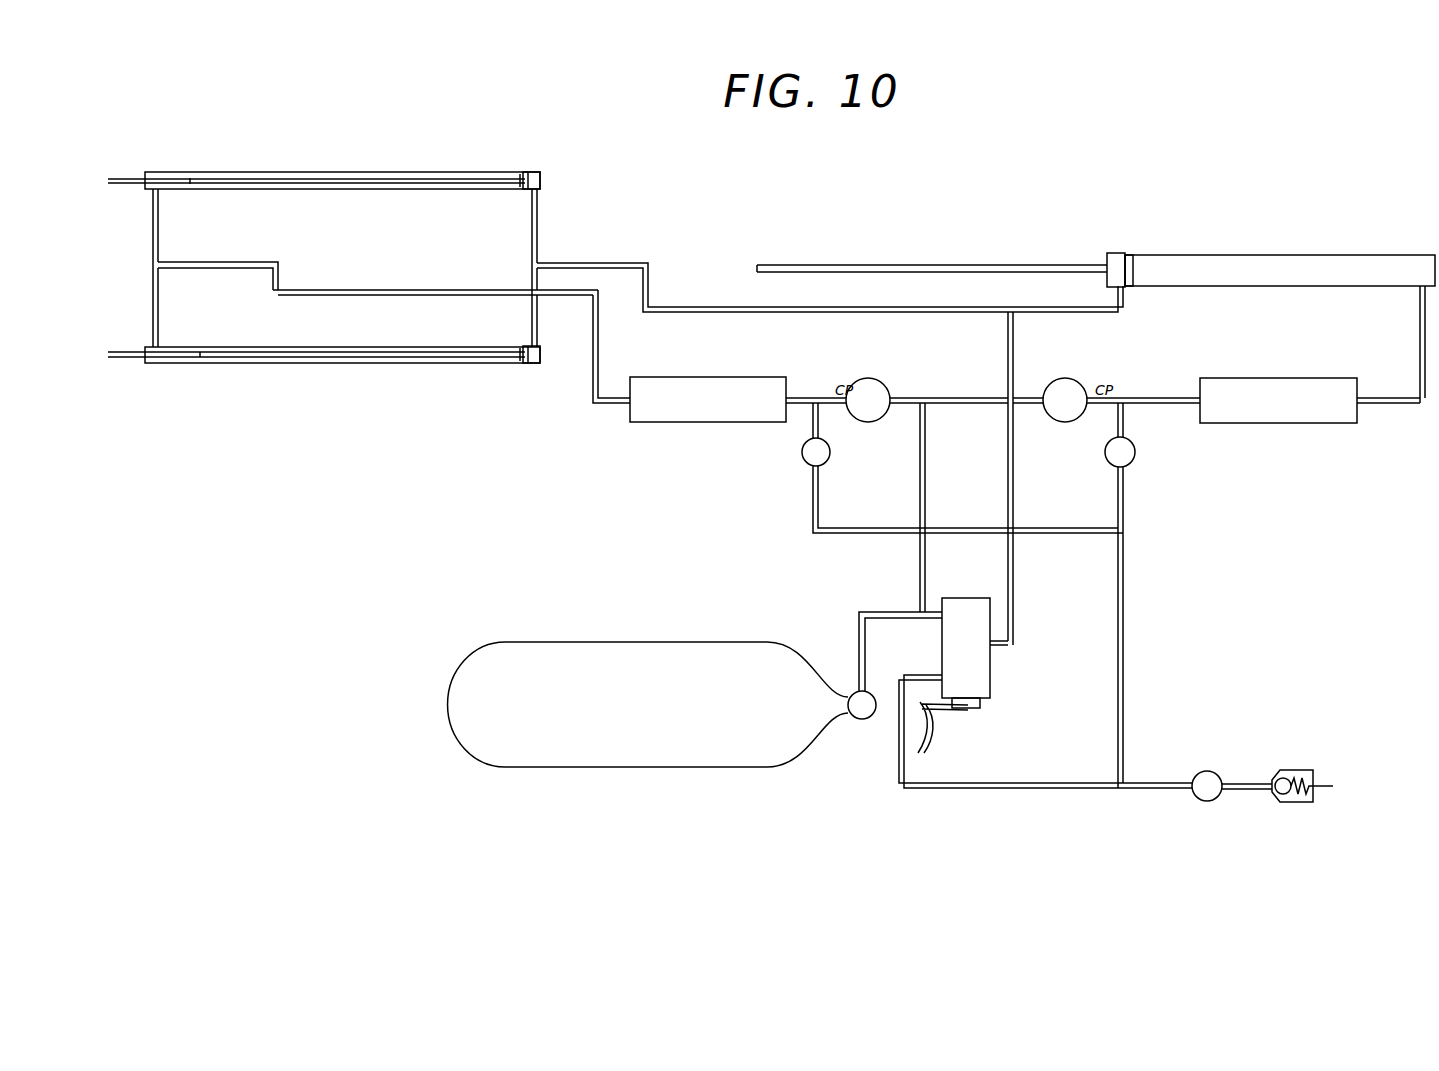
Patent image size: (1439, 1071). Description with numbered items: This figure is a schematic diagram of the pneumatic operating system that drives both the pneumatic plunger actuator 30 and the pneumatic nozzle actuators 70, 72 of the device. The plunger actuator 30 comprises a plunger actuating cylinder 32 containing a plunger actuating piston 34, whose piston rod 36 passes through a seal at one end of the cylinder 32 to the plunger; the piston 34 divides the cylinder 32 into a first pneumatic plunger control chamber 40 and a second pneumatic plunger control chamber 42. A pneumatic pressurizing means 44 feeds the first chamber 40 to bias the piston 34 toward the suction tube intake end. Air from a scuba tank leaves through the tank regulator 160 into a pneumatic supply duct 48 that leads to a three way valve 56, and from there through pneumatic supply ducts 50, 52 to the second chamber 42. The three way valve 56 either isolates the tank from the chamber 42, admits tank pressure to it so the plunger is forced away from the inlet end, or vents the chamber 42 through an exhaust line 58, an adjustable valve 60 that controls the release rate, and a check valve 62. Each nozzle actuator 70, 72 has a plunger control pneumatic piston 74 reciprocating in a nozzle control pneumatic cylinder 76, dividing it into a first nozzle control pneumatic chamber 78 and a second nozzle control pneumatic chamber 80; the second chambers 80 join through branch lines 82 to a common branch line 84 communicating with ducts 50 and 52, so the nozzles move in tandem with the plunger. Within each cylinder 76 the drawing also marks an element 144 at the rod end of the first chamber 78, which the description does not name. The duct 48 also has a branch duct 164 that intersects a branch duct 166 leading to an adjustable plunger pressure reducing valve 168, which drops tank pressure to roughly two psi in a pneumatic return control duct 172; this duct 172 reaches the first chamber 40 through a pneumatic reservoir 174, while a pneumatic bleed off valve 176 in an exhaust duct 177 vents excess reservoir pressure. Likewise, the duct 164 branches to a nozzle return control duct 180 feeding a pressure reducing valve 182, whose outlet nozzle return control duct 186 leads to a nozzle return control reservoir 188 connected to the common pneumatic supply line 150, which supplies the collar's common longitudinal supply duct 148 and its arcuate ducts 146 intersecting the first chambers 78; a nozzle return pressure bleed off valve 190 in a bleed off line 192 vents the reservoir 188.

The pneumatic plunger actuator 30 is at (1257, 255).
The plunger actuating cylinder 32 is at (1268, 287).
The plunger actuating piston 34 is at (1136, 285).
The piston rod 36 is at (965, 265).
The first pneumatic plunger control chamber 40 is at (1368, 270).
The second pneumatic plunger control chamber 42 is at (1116, 258).
The pneumatic pressurizing means 44 is at (1172, 385).
The pneumatic supply duct 48 is at (859, 632).
The pneumatic supply duct 50 is at (1013, 583).
The pneumatic supply duct 52 is at (1050, 313).
The three way valve 56 is at (990, 660).
The exhaust line 58 is at (964, 788).
The adjustable valve 60 is at (1210, 801).
The check valve 62 is at (1292, 802).
The pneumatic nozzle actuator 70 is at (409, 166).
The pneumatic nozzle actuator 72 is at (348, 368).
The plunger control pneumatic piston 74 is at (522, 189).
The nozzle control pneumatic cylinder 76 is at (350, 172).
The first nozzle control pneumatic chamber 78 is at (256, 176).
The second nozzle control pneumatic chamber 80 is at (540, 181).
The branch line 82 is at (532, 235).
The common branch line 84 is at (626, 263).
The rod seal 144 is at (192, 182).
The arcuate duct 146 is at (153, 232).
The common longitudinal supply duct 148 is at (212, 262).
The common pneumatic supply line 150 is at (374, 290).
The tank regulator 160 is at (862, 720).
The branch duct 164 is at (926, 477).
The branch duct 166 is at (958, 403).
The plunger pressure reducing valve 168 is at (1061, 422).
The pneumatic return control duct 172 is at (1152, 403).
The pneumatic reservoir 174 is at (1326, 423).
The pneumatic bleed off valve 176 is at (1136, 455).
The exhaust duct 177 is at (1123, 600).
The nozzle return control duct 180 is at (906, 396).
The pressure reducing valve 182 is at (868, 422).
The nozzle return control duct 186 is at (804, 398).
The nozzle return control reservoir 188 is at (762, 377).
The nozzle return pressure bleed off valve 190 is at (802, 454).
The bleed off line 192 is at (813, 507).